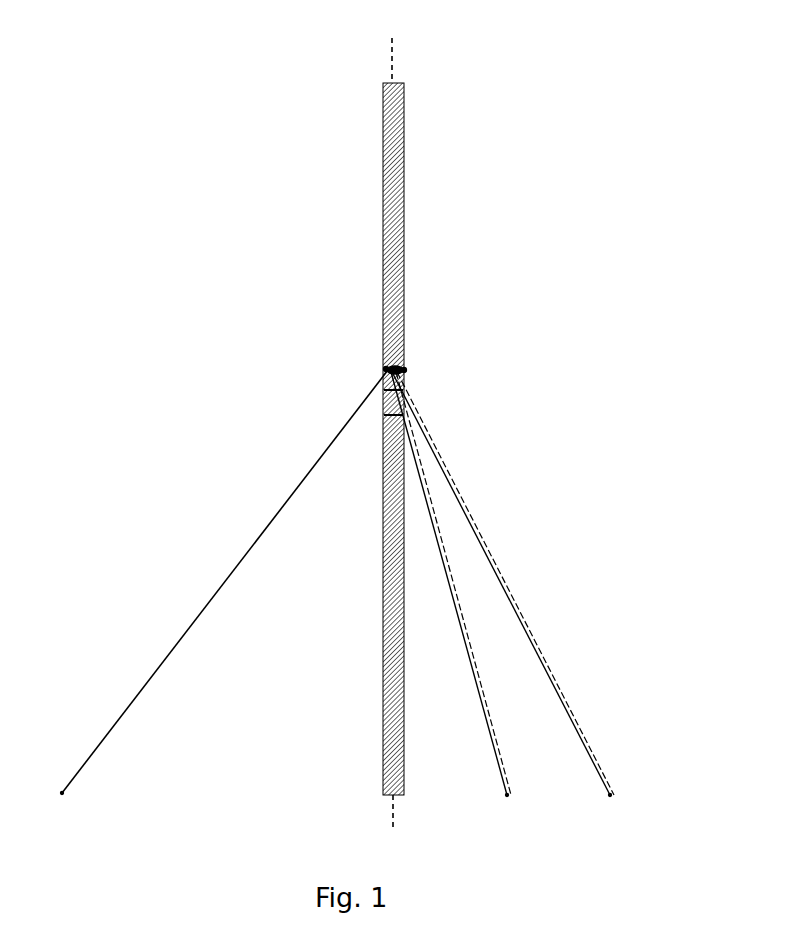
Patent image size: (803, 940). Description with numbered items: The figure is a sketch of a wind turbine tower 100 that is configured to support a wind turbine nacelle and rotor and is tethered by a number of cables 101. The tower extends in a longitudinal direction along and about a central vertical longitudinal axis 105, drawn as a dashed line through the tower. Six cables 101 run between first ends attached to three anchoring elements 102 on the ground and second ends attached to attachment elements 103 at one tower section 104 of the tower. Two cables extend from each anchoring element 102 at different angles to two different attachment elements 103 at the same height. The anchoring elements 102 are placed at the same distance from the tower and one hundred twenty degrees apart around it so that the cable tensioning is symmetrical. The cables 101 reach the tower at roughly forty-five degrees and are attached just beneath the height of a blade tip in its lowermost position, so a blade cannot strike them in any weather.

The wind turbine tower 100 is at (197, 280).
The cables 101 is at (297, 478).
The anchoring elements 102 is at (62, 793).
The attachment elements 103 is at (385, 369).
The tower section 104 is at (388, 366).
The central vertical longitudinal axis 105 is at (389, 70).